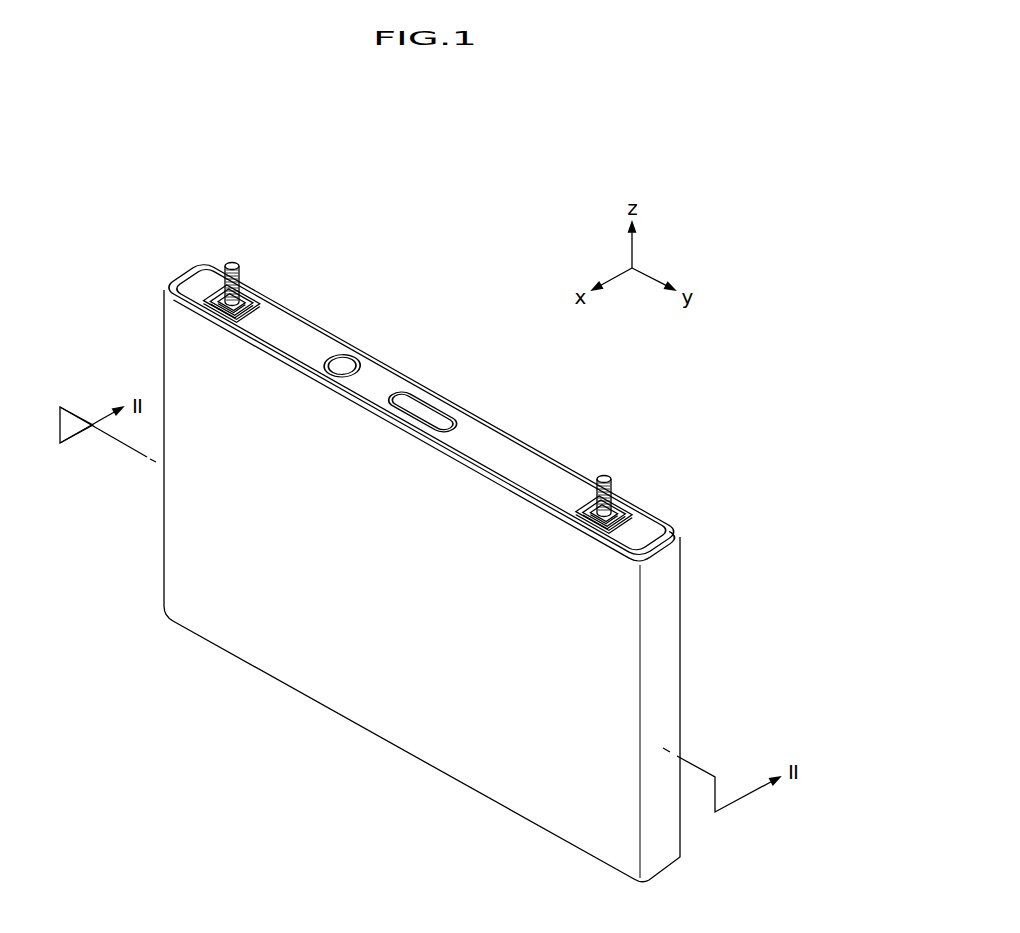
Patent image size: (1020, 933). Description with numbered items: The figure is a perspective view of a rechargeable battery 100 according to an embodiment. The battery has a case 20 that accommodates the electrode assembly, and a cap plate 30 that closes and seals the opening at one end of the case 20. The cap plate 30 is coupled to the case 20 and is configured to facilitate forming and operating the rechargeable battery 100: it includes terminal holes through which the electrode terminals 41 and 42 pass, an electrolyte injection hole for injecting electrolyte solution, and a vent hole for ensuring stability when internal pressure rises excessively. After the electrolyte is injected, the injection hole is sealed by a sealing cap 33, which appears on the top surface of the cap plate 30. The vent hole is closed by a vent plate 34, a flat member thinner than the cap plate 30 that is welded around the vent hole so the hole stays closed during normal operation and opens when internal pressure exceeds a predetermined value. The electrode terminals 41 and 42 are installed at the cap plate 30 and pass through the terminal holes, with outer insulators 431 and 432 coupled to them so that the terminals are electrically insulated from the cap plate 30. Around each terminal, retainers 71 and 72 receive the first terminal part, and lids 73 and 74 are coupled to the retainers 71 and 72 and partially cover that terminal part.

The rechargeable battery 100 is at (409, 177).
The case 20 is at (400, 722).
The cap plate 30 is at (379, 385).
The sealing cap 33 is at (345, 363).
The vent plate 34 is at (426, 410).
The electrode terminal 41 is at (236, 266).
The electrode terminal 42 is at (607, 479).
The retainer 71 is at (263, 300).
The retainer 72 is at (641, 516).
The lid 73 is at (252, 290).
The lid 74 is at (628, 497).
The outer insulator 431 is at (267, 310).
The outer insulator 432 is at (652, 523).